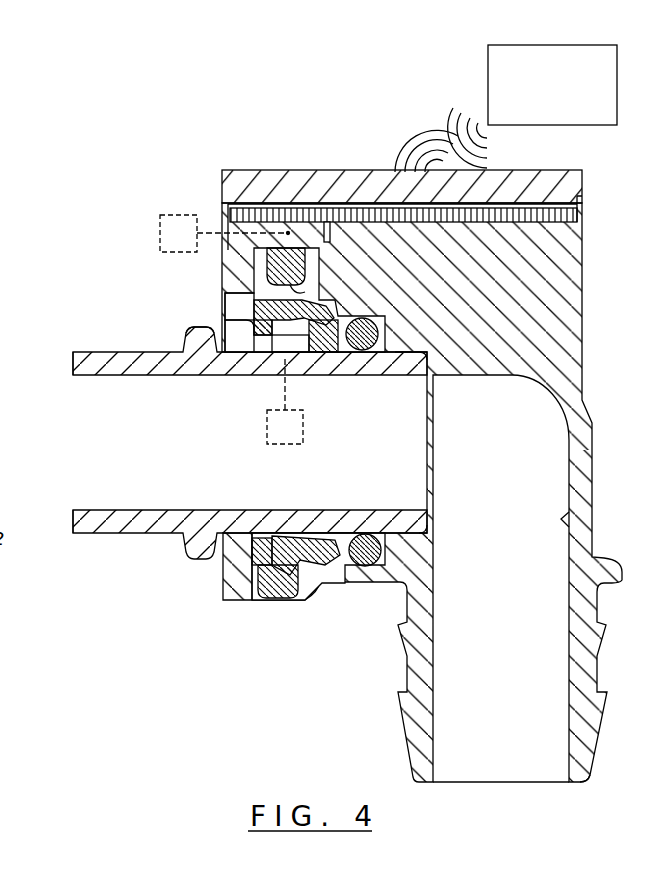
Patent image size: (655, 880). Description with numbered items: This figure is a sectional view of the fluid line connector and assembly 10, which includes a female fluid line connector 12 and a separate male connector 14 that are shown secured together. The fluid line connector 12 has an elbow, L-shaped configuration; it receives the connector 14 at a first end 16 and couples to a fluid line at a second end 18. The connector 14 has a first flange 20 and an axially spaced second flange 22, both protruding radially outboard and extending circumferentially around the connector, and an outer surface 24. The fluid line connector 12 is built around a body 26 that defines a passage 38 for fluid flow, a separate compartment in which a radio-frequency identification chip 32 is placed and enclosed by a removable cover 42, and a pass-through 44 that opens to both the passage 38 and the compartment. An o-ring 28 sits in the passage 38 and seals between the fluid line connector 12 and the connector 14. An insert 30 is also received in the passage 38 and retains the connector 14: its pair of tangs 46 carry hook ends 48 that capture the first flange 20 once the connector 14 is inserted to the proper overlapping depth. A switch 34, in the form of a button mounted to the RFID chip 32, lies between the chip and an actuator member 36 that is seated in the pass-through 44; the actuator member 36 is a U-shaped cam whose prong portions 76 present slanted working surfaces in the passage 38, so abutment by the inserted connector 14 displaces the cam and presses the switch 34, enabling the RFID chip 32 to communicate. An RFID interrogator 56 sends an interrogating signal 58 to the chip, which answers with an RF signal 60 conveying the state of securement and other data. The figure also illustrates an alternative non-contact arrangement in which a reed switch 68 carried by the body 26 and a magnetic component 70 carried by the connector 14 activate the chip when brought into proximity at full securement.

The fluid line connector and assembly 10 is at (241, 90).
The fluid line connector 12 is at (430, 492).
The connector 14 is at (138, 533).
The first end 16 is at (275, 592).
The second end 18 is at (597, 747).
The first flange 20 is at (247, 547).
The second flange 22 is at (199, 552).
The outer surface 24 is at (90, 538).
The body 26 is at (525, 288).
The o-ring 28 is at (363, 554).
The insert 30 is at (294, 560).
The radio-frequency identification (RFID) chip 32 is at (556, 240).
The switch 34 is at (260, 257).
The actuator member 36 is at (250, 283).
The passage 38 is at (566, 518).
The removable cover 42 is at (292, 172).
The pass-through 44 is at (340, 312).
The tangs 46 is at (270, 555).
The hook ends 48 is at (230, 340).
The RFID interrogator 56 is at (542, 98).
The interrogating signal 58 is at (456, 104).
The RF signal 60 is at (404, 137).
The reed switch 68 is at (178, 214).
The magnetic component 70 is at (303, 428).
The prong portions 76 is at (262, 345).